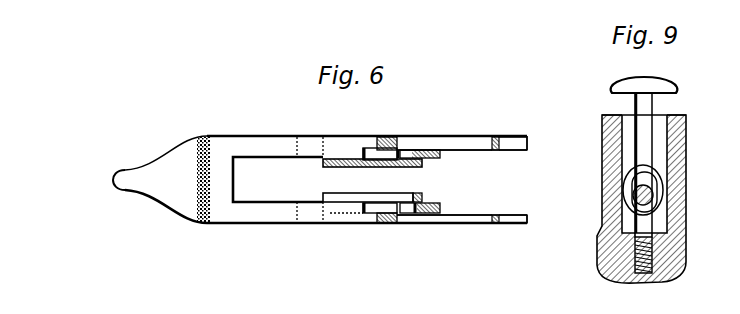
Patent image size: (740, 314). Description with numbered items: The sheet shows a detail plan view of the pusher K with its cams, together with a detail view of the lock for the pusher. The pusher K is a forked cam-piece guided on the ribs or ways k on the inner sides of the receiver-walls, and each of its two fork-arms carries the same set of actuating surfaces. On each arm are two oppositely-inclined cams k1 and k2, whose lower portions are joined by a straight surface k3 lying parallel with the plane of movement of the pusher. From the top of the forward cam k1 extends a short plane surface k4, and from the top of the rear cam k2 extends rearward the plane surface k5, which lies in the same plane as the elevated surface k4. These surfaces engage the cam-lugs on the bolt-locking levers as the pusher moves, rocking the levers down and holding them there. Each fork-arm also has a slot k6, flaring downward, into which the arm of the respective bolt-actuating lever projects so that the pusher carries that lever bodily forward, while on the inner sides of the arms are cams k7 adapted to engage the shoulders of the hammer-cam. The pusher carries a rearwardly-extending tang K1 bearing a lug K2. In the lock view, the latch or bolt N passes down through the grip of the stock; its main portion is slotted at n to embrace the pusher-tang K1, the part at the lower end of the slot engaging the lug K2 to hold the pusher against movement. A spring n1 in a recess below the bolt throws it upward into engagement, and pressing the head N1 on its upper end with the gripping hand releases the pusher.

In FIG. 6, the pusher K is at (252, 140).
In FIG. 6, the ribs or ways k is at (397, 195).
In FIG. 6, the forward cam k1 is at (494, 140).
In FIG. 6, the rear cam k2 is at (388, 138).
In FIG. 6, the straight surface k3 is at (442, 142).
In FIG. 6, the short plane surface k4 is at (515, 142).
In FIG. 6, the plane or straight surface k5 is at (345, 142).
In FIG. 6, the slot k6 is at (372, 148).
In FIG. 6, the cam k7 is at (422, 165).
In FIG. 9, the latch or bolt N is at (652, 135).
In FIG. 9, the head N1 is at (668, 84).
In FIG. 9, the slot n is at (658, 177).
In FIG. 9, the spring n1 is at (657, 263).
In FIG. 9, the pusher-tang K1 is at (660, 193).
In FIG. 9, the lug K2 is at (655, 212).